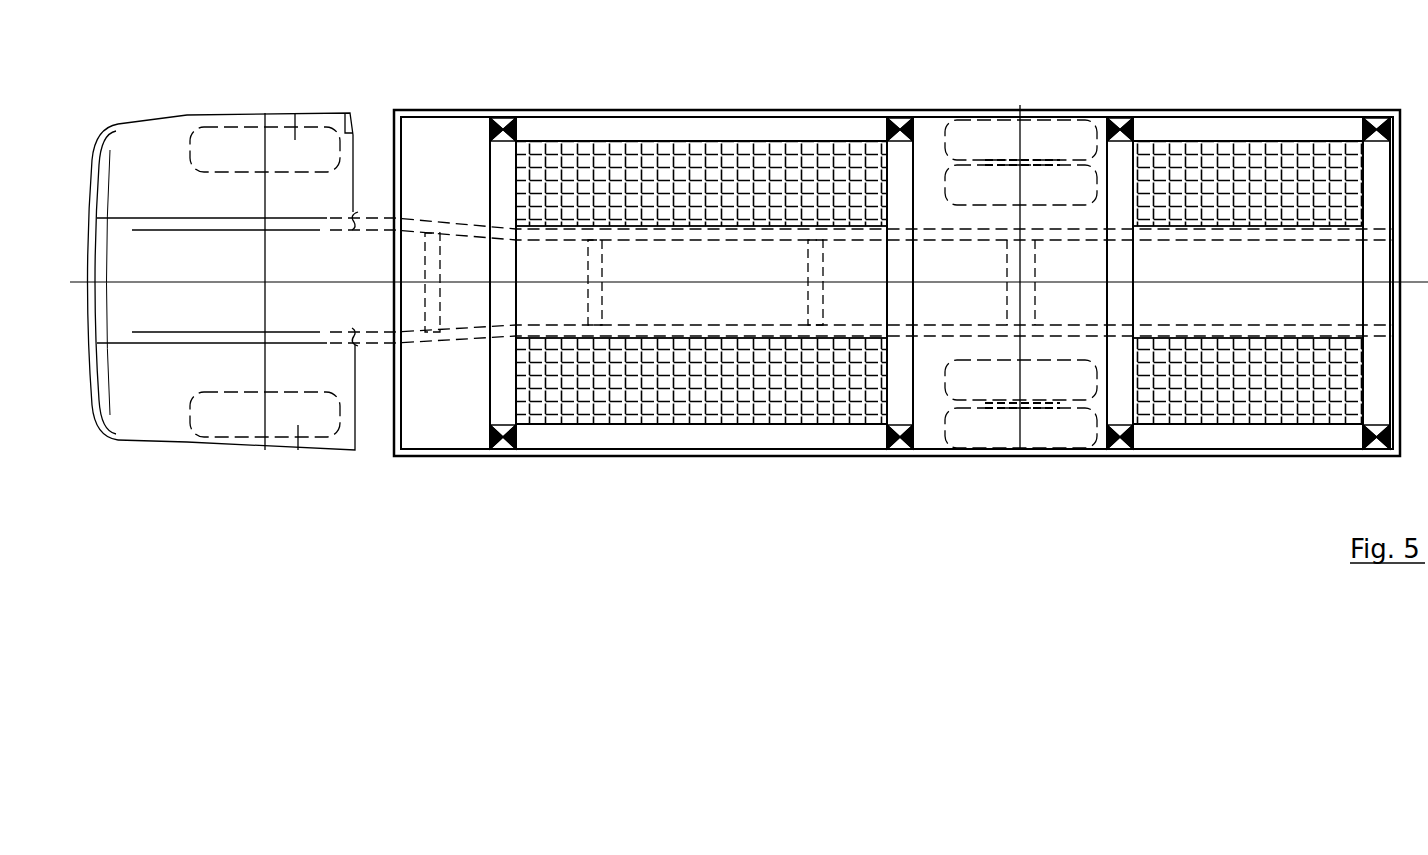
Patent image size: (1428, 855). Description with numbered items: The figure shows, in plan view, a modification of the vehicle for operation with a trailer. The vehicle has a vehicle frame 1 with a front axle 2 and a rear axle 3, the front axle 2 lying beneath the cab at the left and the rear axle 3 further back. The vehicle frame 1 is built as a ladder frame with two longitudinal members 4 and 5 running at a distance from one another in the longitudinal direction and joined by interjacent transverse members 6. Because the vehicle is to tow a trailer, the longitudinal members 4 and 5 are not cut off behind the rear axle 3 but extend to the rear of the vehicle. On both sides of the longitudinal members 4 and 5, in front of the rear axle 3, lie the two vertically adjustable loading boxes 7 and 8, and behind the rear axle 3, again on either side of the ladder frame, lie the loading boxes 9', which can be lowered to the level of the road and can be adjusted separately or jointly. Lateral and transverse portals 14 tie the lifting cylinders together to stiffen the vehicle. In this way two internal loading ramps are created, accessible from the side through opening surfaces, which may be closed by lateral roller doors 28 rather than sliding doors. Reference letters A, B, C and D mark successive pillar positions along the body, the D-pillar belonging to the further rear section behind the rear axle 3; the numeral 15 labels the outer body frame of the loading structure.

The vehicle frame 1 is at (443, 343).
The front axle 2 is at (243, 440).
The rear axle 3 is at (1028, 406).
The longitudinal member 4 is at (527, 335).
The longitudinal member 5 is at (532, 240).
The transverse members 6 is at (808, 271).
The loading box 7 is at (632, 432).
The loading box 8 is at (650, 141).
The loading box 9' is at (1248, 305).
The portal 14 is at (734, 135).
The load frame 15 is at (578, 112).
The lateral roller doors 28 is at (1151, 117).
The support post A is at (503, 457).
The support post B is at (900, 457).
The support post C is at (1108, 458).
The support post D is at (1368, 455).